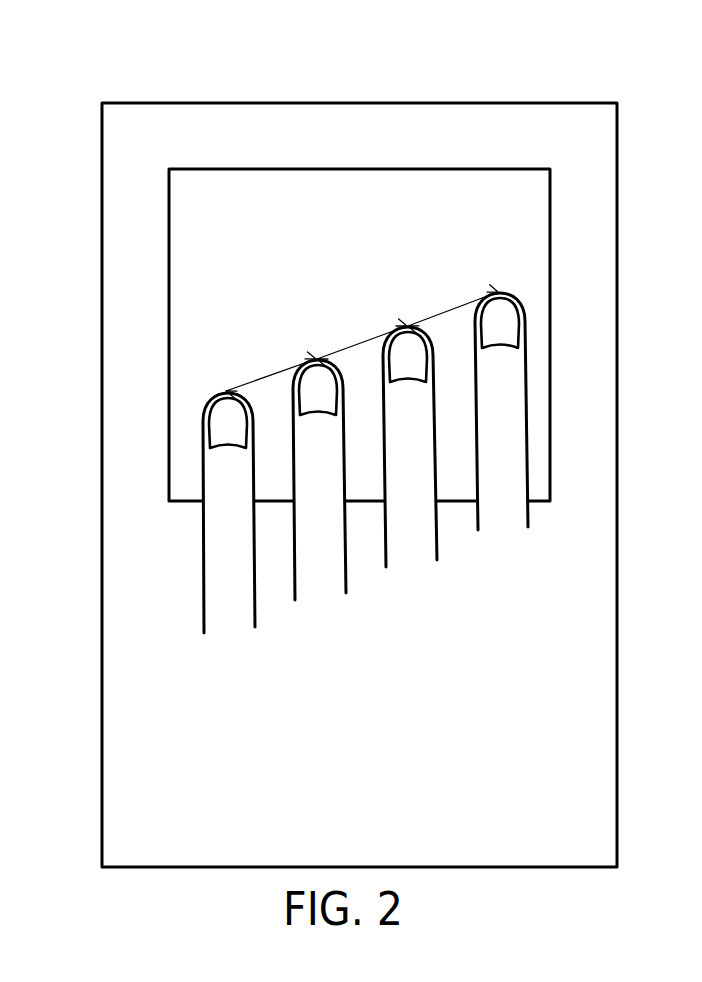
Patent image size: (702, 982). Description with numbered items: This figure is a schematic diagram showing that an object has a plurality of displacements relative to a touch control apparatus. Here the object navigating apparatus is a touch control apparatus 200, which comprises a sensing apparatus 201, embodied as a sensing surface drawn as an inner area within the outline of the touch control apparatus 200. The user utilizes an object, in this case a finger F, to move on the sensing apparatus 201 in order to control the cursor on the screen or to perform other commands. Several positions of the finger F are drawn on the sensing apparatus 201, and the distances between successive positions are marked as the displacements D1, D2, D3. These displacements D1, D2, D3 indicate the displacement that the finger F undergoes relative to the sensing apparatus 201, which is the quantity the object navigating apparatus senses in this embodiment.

The touch control apparatus 200 is at (543, 102).
The sensing apparatus 201 is at (550, 205).
The finger F is at (228, 578).
The displacement D1 is at (271, 375).
The displacement D2 is at (362, 342).
The displacement D3 is at (453, 309).